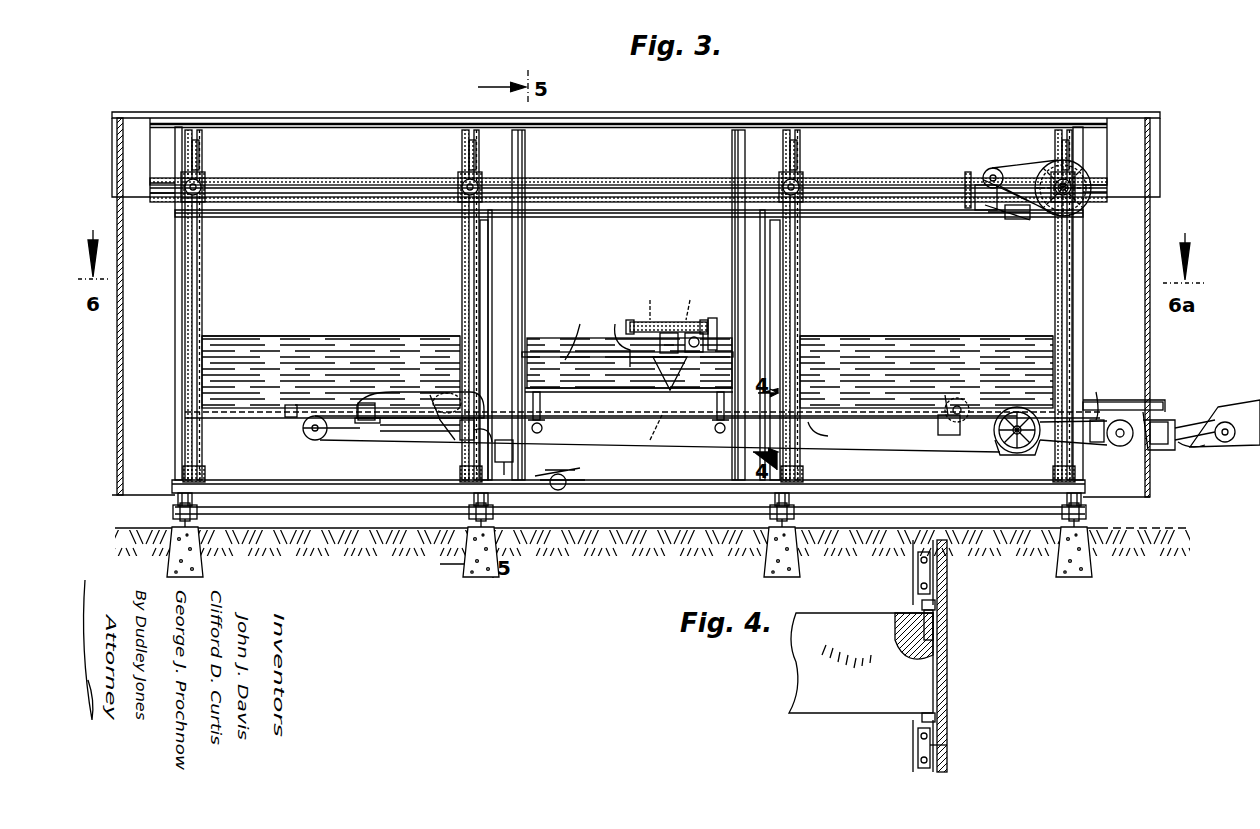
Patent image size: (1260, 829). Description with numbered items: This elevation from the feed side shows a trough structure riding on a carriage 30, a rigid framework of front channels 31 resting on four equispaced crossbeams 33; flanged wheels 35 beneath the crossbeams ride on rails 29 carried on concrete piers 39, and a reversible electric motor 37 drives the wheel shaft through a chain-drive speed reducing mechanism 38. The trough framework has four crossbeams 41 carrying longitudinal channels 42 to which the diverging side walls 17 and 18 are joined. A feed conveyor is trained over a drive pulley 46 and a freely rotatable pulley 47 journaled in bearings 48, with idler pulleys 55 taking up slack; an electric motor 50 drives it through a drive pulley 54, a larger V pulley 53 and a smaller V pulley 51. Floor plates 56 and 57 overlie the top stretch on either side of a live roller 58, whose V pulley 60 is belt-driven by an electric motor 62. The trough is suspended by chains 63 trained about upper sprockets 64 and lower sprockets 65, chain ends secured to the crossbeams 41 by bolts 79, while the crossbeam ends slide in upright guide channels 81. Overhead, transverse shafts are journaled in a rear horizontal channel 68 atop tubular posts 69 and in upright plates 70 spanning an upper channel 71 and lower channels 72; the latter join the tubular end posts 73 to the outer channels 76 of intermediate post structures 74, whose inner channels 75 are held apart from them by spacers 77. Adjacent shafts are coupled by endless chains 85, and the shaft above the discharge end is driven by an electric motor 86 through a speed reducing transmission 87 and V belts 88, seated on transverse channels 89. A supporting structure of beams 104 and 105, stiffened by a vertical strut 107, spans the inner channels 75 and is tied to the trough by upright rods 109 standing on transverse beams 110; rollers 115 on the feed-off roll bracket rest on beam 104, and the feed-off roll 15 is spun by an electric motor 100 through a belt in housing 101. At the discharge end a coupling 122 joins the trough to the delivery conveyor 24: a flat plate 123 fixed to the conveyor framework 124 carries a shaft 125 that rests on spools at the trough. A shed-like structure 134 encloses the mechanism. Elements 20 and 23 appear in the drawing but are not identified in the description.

In FIG. 3, the carriage 30 is at (417, 100).
In FIG. 3, the shed-like structure 134 is at (1047, 102).
In FIG. 3, the upper channel 71 is at (903, 124).
In FIG. 3, the end posts 73 is at (176, 310).
In FIG. 3, the upright channels 81 is at (192, 297).
In FIG. 4, the upright channels 81 is at (947, 598).
In FIG. 3, the chains 63 is at (203, 262).
In FIG. 4, the chains 63 is at (940, 757).
In FIG. 3, the upper sprockets 64 is at (206, 173).
In FIG. 3, the upright plates 70 is at (202, 150).
In FIG. 3, the lower sprockets 65 is at (200, 476).
In FIG. 3, the spacers 77 is at (525, 152).
In FIG. 3, the upright posts 69 is at (487, 256).
In FIG. 3, the outer channels 76 is at (514, 275).
In FIG. 3, the inner channels 75 is at (526, 296).
In FIG. 3, the intermediate posts 74 is at (548, 245).
In FIG. 3, the endless chain 85 is at (315, 178).
In FIG. 3, the horizontal channel 68 is at (386, 188).
In FIG. 3, the channels 72 is at (320, 217).
In FIG. 3, the V belts 88 is at (968, 172).
In FIG. 3, the electric motor 86 is at (990, 170).
In FIG. 3, the speed reducing transmission 87 is at (1029, 159).
In FIG. 3, the channels 89 is at (1012, 217).
In FIG. 3, the side wall 17 is at (868, 338).
In FIG. 3, the side wall 18 is at (907, 340).
In FIG. 3, the feed-off roll 15 is at (680, 320).
In FIG. 3, the rollers 115 is at (714, 297).
In FIG. 3, the housing 101 is at (724, 311).
In FIG. 3, the electric motor 100 is at (706, 338).
In FIG. 3, the vertical strut 107 is at (620, 330).
In FIG. 3, the beam 105 is at (615, 324).
In FIG. 3, the beam 104 is at (580, 338).
In FIG. 3, the saw blade 20 is at (662, 403).
In FIG. 3, the upright rods 109 is at (545, 425).
In FIG. 3, the transverse beams 110 is at (545, 428).
In FIG. 3, the crossbeams 41 is at (185, 432).
In FIG. 4, the crossbeams 41 is at (868, 698).
In FIG. 3, the live roller 58 is at (420, 410).
In FIG. 3, the bearings 48 is at (303, 428).
In FIG. 3, the longitudinal channel 42 is at (903, 440).
In FIG. 3, the freely rotatable pulley 47 is at (310, 436).
In FIG. 3, the floor plate 56 is at (258, 420).
In FIG. 3, the electric motor 62 is at (363, 430).
In FIG. 3, the V pulley 60 is at (410, 430).
In FIG. 3, the floor plate 57 is at (438, 425).
In FIG. 3, the idler pulleys 55 is at (468, 442).
In FIG. 3, the chain-drive speed reducing mechanism 38 is at (527, 471).
In FIG. 3, the reversible electric motor 37 is at (560, 474).
In FIG. 3, the channels 31 is at (324, 480).
In FIG. 3, the crossbeams 33 is at (193, 500).
In FIG. 3, the flanged wheels 35 is at (173, 510).
In FIG. 3, the rails 29 is at (172, 527).
In FIG. 3, the concrete piers 39 is at (200, 560).
In FIG. 3, the V pulley 53 is at (1024, 452).
In FIG. 3, the V pulley 51 is at (1002, 448).
In FIG. 3, the electric motor 50 is at (958, 422).
In FIG. 3, the drive pulley 54 is at (945, 436).
In FIG. 3, the drive pulley 46 is at (1108, 446).
In FIG. 3, the coupling 122 is at (1195, 388).
In FIG. 3, the shaft 125 is at (1150, 445).
In FIG. 3, the arm 23 is at (1214, 415).
In FIG. 3, the trough-like framework 124 is at (1245, 408).
In FIG. 3, the delivery conveyor 24 is at (1226, 444).
In FIG. 3, the flat plate 123 is at (1192, 452).
In FIG. 4, the bolts 79 is at (943, 635).